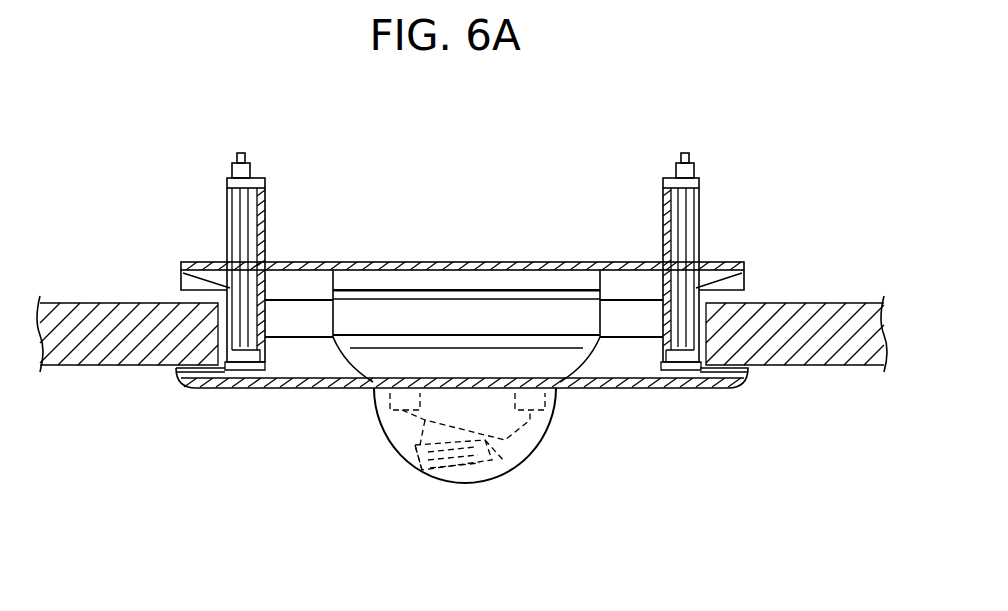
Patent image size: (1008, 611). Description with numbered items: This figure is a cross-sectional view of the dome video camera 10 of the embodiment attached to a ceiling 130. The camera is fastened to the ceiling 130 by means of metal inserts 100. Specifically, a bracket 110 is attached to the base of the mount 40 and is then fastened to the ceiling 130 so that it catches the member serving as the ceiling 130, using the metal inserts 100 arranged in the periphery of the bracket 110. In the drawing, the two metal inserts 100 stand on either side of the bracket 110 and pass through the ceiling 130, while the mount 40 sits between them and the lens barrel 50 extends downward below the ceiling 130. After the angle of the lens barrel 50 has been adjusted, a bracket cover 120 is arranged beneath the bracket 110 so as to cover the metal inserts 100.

The dome video camera 10 is at (358, 481).
The mount 40 is at (534, 280).
The lens barrel 50 is at (508, 470).
The metal inserts 100 is at (253, 176).
The bracket 110 is at (373, 262).
The bracket cover 120 is at (632, 385).
The ceiling 130 is at (102, 357).